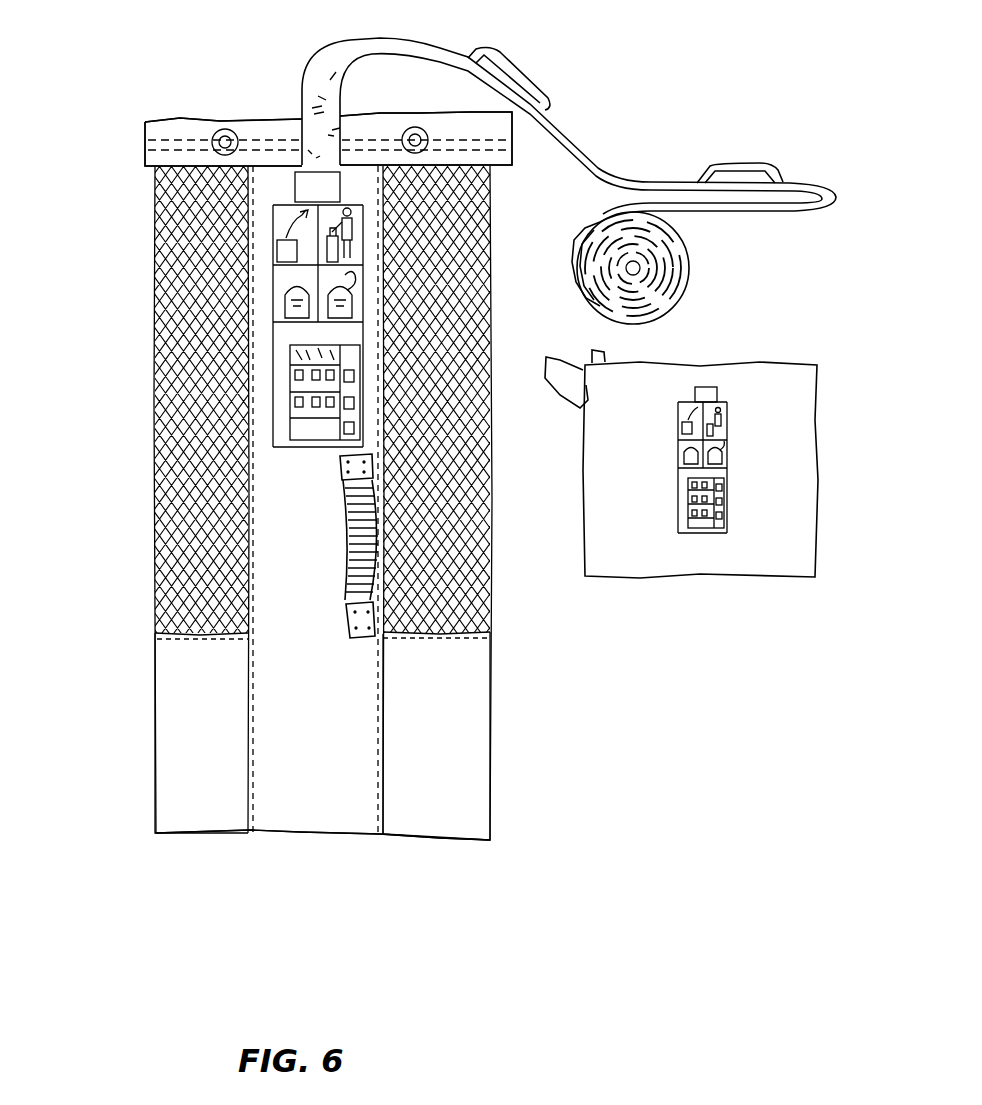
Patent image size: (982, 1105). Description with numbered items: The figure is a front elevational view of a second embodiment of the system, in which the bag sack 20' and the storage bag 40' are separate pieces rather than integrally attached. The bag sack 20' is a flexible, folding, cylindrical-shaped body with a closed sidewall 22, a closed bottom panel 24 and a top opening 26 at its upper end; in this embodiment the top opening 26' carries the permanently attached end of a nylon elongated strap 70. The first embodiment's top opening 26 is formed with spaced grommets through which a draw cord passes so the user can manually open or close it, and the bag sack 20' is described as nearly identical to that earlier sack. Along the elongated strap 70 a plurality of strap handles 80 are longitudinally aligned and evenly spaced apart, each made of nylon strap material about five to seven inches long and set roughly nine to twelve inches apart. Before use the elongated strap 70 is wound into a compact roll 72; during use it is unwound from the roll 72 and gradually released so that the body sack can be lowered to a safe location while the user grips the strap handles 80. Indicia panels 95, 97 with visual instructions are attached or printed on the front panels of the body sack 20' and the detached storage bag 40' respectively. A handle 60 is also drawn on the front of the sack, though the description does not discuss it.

The bag sack 20' is at (306, 439).
The closed sidewall 22 is at (358, 145).
The closed bottom panel 24 is at (354, 836).
The top opening 26 is at (411, 404).
The top opening 26' is at (328, 108).
The storage bag 40' is at (682, 436).
The handle 60 is at (357, 541).
The elongated strap 70 is at (333, 50).
The compact roll 72 is at (690, 247).
The strap handles 80 is at (497, 47).
The indicia panel 95 is at (277, 342).
The indicia panel 97 is at (676, 486).